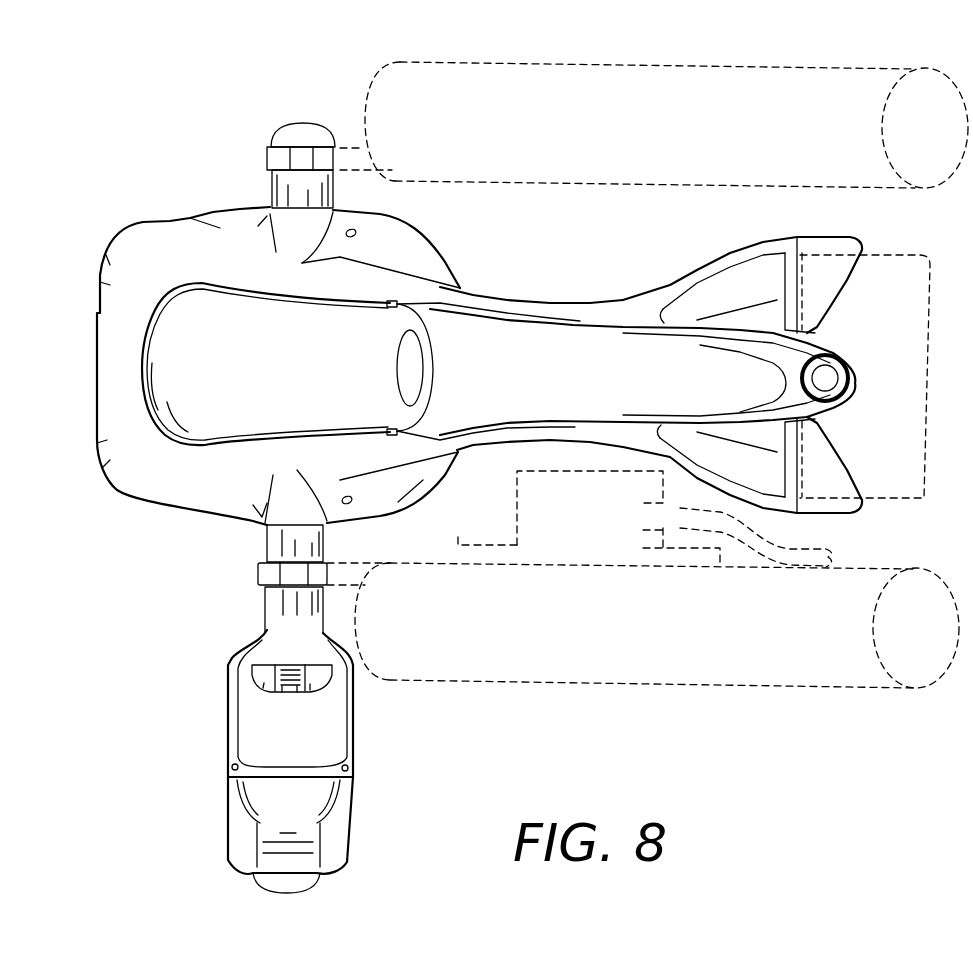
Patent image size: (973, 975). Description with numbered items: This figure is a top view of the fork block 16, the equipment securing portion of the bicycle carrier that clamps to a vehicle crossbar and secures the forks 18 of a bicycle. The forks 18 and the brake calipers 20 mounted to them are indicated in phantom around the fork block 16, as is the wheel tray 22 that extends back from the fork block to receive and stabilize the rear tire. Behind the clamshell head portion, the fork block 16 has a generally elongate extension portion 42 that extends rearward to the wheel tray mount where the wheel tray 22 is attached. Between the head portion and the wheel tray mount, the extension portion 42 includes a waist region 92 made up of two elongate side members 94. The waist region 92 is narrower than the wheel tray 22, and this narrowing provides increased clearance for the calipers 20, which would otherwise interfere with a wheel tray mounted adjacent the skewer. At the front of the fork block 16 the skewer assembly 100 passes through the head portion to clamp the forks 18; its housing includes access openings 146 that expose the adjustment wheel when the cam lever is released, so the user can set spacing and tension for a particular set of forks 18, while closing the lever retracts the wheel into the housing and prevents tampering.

The fork block 16 is at (110, 492).
The forks 18 is at (545, 163).
The brake calipers 20 is at (507, 495).
The wheel tray 22 is at (888, 253).
The extension portion 42 is at (727, 251).
The waist region 92 is at (558, 302).
The elongate side members 94 is at (555, 325).
The skewer assembly 100 is at (212, 706).
The access openings 146 is at (263, 673).